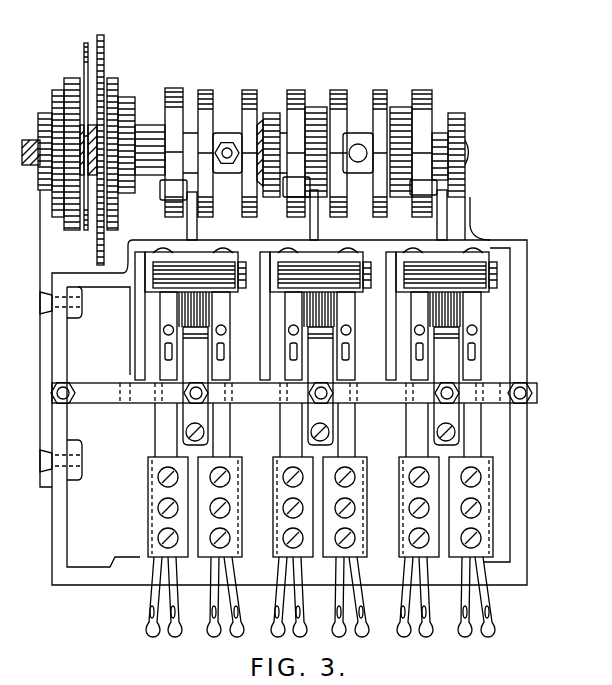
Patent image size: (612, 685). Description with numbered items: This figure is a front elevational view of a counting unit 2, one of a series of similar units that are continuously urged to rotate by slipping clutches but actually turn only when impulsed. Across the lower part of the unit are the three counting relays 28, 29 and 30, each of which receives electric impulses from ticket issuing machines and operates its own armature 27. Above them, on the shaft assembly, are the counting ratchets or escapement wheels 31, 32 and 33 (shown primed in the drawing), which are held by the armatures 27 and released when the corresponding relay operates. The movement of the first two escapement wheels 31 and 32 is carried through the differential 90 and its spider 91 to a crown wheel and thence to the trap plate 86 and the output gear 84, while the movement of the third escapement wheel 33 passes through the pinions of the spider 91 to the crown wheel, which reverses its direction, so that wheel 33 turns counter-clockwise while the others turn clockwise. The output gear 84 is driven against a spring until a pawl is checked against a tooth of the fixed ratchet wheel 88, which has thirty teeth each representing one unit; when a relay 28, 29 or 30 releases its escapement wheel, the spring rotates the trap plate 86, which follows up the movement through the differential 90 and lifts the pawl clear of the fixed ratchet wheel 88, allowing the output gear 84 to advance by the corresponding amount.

The counting unit 2 is at (520, 258).
The armature 27 is at (187, 227).
The counting relay 28 is at (472, 453).
The counting relay 29 is at (343, 455).
The counting relay 30 is at (220, 448).
The counting ratchet (escapement wheel) 31 is at (421, 93).
The counting ratchet (escapement wheel) 32 is at (293, 93).
The counting ratchet (escapement wheel) 33 is at (172, 97).
The output gear 84 is at (101, 36).
The trap plate 86 is at (87, 43).
The fixed ratchet wheel 88 is at (72, 78).
The differential 90 is at (357, 134).
The spider 91 is at (227, 135).